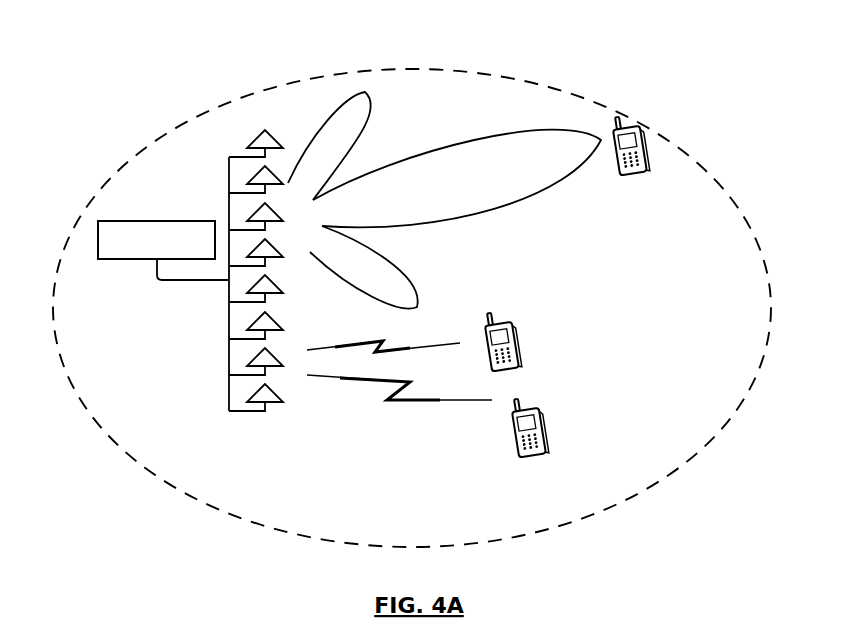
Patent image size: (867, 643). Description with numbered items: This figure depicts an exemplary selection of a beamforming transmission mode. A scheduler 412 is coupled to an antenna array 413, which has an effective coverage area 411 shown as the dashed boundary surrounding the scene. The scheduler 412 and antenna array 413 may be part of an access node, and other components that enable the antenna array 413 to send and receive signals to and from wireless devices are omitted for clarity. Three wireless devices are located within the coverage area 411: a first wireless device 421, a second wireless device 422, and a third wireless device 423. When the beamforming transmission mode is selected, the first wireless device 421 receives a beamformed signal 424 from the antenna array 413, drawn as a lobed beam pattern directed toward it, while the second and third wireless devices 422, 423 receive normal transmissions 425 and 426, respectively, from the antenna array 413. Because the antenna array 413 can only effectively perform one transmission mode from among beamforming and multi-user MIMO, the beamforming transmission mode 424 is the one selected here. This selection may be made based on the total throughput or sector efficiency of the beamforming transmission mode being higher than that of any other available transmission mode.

The coverage area 411 is at (165, 135).
The scheduler 412 is at (140, 262).
The antenna array 413 is at (227, 393).
The first wireless device 421 is at (640, 175).
The second wireless device 422 is at (513, 350).
The third wireless device 423 is at (542, 447).
The beamformed signal 424 is at (483, 138).
The normal transmission 425 is at (380, 341).
The normal transmission 426 is at (388, 400).